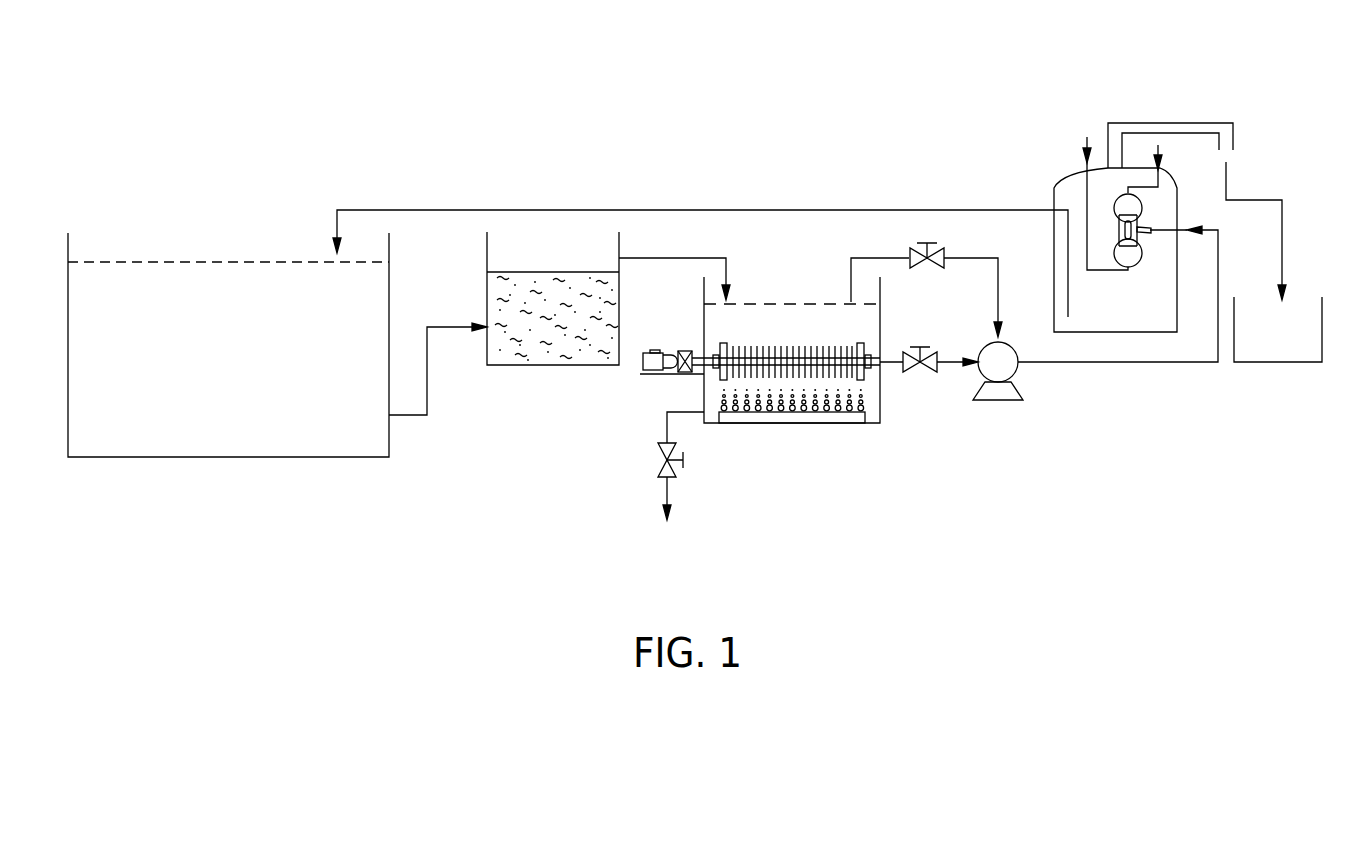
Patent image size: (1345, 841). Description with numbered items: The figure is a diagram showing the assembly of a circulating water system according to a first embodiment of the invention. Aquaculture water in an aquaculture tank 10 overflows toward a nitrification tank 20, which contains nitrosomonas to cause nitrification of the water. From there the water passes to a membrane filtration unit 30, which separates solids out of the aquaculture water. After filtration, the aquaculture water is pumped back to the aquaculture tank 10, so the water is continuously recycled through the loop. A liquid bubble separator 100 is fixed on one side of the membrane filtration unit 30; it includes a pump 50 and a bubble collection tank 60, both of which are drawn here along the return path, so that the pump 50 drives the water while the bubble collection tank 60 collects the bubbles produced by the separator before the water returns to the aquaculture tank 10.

The aquaculture tank 10 is at (222, 470).
The nitrification tank 20 is at (548, 380).
The membrane filtration unit 30 is at (788, 440).
The pump 50 is at (988, 418).
The bubble collection tank 60 is at (1273, 378).
The liquid bubble separator 100 is at (1092, 113).